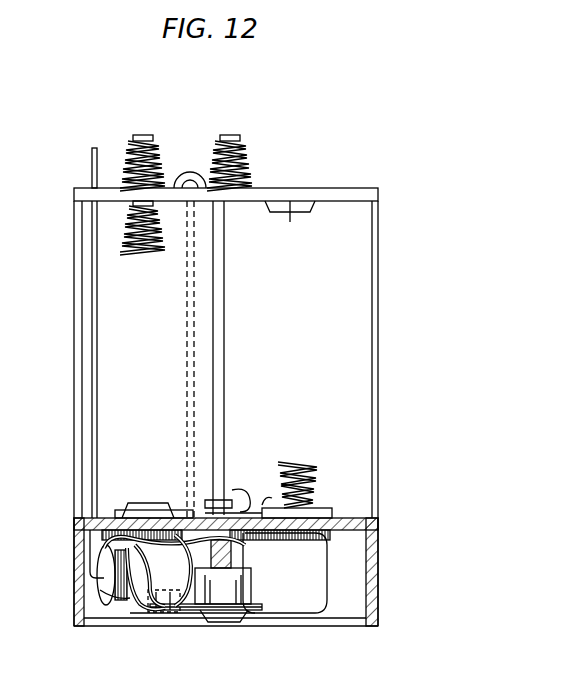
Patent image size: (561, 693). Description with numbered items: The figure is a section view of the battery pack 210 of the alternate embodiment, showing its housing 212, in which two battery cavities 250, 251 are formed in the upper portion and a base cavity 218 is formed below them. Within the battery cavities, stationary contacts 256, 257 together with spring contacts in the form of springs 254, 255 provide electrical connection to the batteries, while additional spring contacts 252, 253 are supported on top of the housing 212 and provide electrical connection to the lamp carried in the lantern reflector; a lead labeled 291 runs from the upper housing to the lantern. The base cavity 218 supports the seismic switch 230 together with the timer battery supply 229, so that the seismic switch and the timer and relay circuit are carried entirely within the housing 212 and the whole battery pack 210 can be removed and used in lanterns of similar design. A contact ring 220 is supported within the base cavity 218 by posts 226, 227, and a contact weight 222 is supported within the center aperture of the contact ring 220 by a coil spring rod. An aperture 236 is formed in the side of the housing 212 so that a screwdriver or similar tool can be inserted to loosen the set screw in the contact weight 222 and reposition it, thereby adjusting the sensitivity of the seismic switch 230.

The battery pack 210 is at (378, 268).
The housing 212 is at (378, 355).
The base cavity 218 is at (345, 610).
The contact ring 220 is at (262, 608).
The contact weight 222 is at (225, 615).
The post 226 is at (290, 584).
The post 227 is at (175, 600).
The timer battery supply 229 is at (310, 558).
The seismic switch 230 is at (150, 624).
The aperture 236 is at (372, 580).
The battery cavity 250 is at (160, 360).
The battery cavity 251 is at (310, 360).
The spring contact 252 is at (163, 152).
The spring contact 253 is at (246, 152).
The spring 254 is at (143, 256).
The spring 255 is at (300, 470).
The stationary contact 256 is at (148, 503).
The stationary contact 257 is at (280, 214).
The wire to element 291 is at (96, 148).